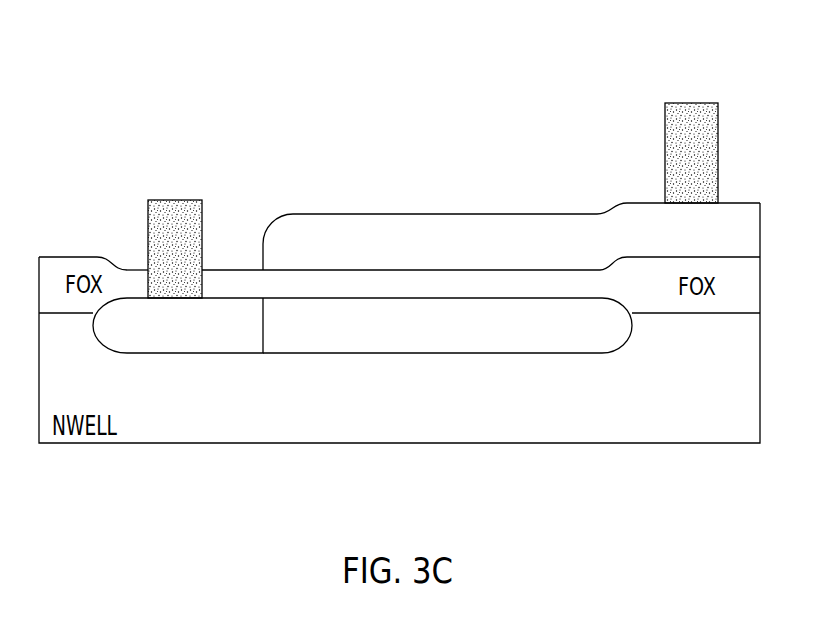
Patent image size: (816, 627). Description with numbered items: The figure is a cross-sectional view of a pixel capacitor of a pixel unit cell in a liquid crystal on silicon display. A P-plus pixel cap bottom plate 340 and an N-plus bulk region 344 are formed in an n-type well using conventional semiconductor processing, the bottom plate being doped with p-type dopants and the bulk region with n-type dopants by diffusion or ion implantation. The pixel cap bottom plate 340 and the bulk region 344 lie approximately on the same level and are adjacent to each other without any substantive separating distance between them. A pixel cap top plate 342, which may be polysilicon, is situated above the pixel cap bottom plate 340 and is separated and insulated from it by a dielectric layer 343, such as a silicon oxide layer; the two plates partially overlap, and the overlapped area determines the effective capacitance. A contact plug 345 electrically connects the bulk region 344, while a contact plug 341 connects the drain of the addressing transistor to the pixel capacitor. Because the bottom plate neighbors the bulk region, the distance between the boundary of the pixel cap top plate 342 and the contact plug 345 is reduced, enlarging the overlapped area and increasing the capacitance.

The pixel cap bottom plate 340 is at (405, 331).
The contact plug 341 is at (695, 128).
The pixel cap top plate 342 is at (350, 237).
The dielectric layer 343 is at (437, 288).
The bulk region 344 is at (185, 343).
The contact plug 345 is at (182, 218).